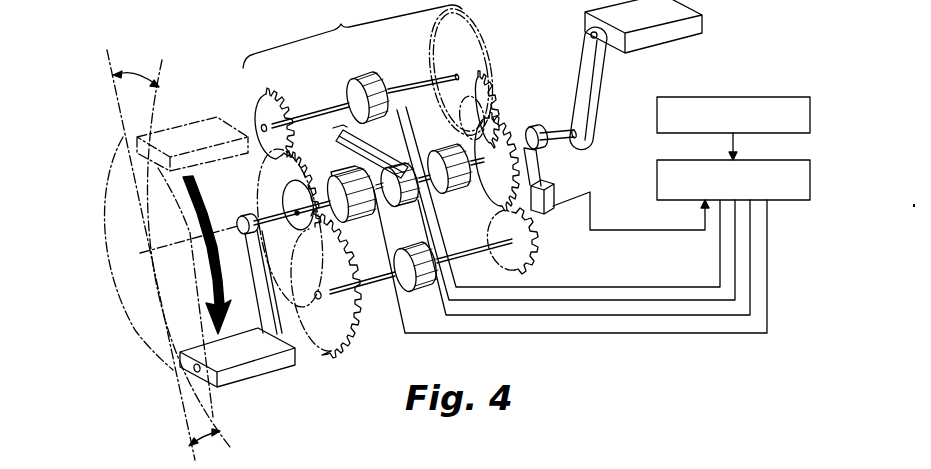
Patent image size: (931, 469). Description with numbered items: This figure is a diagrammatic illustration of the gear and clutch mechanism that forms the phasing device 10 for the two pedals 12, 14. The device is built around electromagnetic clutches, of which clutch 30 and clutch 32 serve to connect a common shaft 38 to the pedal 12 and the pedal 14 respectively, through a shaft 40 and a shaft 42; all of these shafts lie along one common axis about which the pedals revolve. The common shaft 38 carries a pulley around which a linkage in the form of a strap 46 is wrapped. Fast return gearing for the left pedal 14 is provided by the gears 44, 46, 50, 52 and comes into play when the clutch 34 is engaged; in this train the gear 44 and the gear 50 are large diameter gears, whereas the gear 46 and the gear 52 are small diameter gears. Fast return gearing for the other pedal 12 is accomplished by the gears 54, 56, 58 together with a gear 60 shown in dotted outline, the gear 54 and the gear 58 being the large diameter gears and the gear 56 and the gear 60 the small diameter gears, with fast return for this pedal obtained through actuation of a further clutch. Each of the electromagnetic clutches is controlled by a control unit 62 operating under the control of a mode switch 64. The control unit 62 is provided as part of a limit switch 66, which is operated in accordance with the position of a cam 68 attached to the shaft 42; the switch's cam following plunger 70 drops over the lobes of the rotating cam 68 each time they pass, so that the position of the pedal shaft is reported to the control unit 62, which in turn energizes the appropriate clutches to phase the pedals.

The phasing device 10 is at (352, 35).
The pedal 12 is at (245, 360).
The pedal 14 is at (656, 20).
The electromagnetic clutch 30 is at (355, 220).
The electromagnetic clutch 32 is at (456, 194).
The electromagnetic clutch 34 is at (372, 77).
The common shaft 38 is at (393, 207).
The shaft 40 is at (263, 230).
The shaft 42 is at (556, 104).
The gear 44 is at (262, 174).
The gear 46 is at (262, 99).
The gear 50 is at (496, 78).
The gear 52 is at (503, 93).
The gear 54 is at (515, 113).
The gear 56 is at (539, 245).
The gear 58 is at (356, 344).
The gear 60 is at (287, 203).
The control unit 62 is at (783, 200).
The mode switch 64 is at (725, 97).
The limit switch 66 is at (553, 196).
The cam 68 is at (591, 141).
The cam following plunger 70 is at (545, 168).